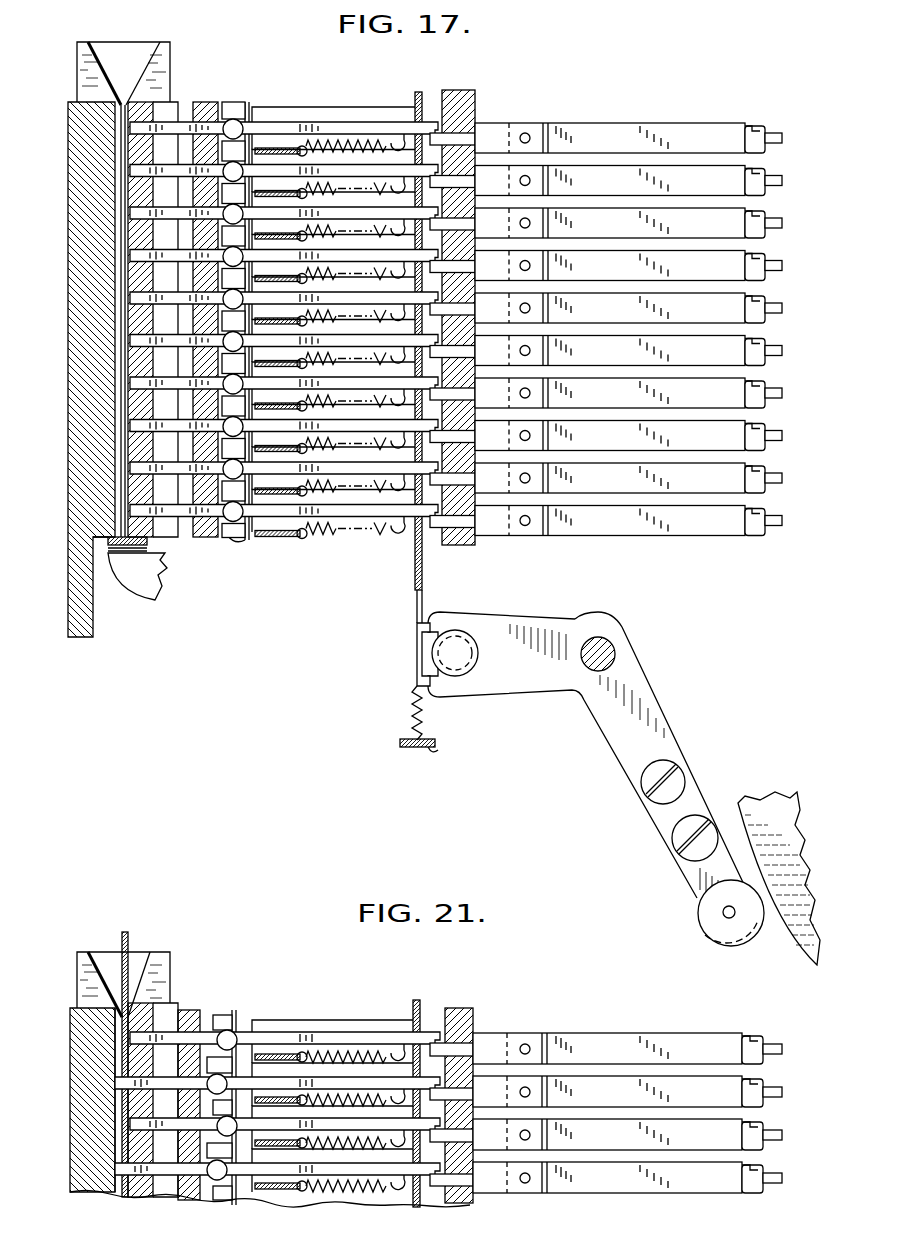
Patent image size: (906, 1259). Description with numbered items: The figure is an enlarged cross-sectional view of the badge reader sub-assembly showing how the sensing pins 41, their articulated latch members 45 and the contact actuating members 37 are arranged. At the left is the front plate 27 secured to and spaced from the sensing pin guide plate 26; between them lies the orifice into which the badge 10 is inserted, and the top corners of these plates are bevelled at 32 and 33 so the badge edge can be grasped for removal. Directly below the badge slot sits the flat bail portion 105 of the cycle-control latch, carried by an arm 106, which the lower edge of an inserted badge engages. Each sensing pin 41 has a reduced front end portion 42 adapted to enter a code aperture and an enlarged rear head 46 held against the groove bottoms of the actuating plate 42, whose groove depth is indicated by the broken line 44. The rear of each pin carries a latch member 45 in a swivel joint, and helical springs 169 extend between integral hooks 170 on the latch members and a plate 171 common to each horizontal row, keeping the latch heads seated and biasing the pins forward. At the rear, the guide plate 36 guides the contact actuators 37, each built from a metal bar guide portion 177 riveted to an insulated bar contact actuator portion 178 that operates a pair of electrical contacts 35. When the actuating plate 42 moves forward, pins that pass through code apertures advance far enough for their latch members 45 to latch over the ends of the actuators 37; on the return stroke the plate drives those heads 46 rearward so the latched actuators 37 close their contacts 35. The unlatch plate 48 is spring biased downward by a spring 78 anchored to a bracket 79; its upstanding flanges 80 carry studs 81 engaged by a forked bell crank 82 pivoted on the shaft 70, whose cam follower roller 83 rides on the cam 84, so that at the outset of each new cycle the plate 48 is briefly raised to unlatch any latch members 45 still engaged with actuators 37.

In FIG. 21, the badge 10 is at (128, 940).
In FIG. 17, the sensing pin guide plate 26 is at (140, 110).
In FIG. 21, the sensing pin guide plate 26 is at (160, 980).
In FIG. 17, the front plate 27 is at (70, 324).
In FIG. 21, the front plate 27 is at (72, 1022).
In FIG. 21, the bevel 32 is at (145, 962).
In FIG. 21, the bevel 33 is at (105, 960).
In FIG. 17, the electrical contacts 35 is at (785, 178).
In FIG. 21, the electrical contacts 35 is at (785, 1090).
In FIG. 17, the guide plate 36 is at (462, 100).
In FIG. 21, the guide plate 36 is at (460, 1010).
In FIG. 17, the contact actuators 37 is at (575, 130).
In FIG. 21, the contact actuators 37 is at (594, 1042).
In FIG. 17, the sensing pins 41 is at (176, 192).
In FIG. 21, the sensing pins 41 is at (166, 1106).
In FIG. 17, the actuating plate 42 is at (204, 112).
In FIG. 21, the actuating plate 42 is at (205, 1020).
In FIG. 17, the broken line indicating groove depth 44 is at (243, 540).
In FIG. 17, the articulated latch member 45 is at (328, 118).
In FIG. 21, the articulated latch member 45 is at (314, 1035).
In FIG. 17, the enlarged head 46 is at (233, 112).
In FIG. 17, the unlatch plate 48 is at (421, 100).
In FIG. 21, the unlatch plate 48 is at (416, 1000).
In FIG. 17, the shaft 70 is at (605, 652).
In FIG. 17, the spring 78 is at (422, 716).
In FIG. 17, the bracket 79 is at (400, 744).
In FIG. 17, the upstanding flanges 80 is at (424, 654).
In FIG. 17, the stud 81 is at (462, 638).
In FIG. 17, the forked bell crank 82 is at (688, 770).
In FIG. 17, the cam follower roller 83 is at (712, 938).
In FIG. 17, the cam 84 is at (780, 826).
In FIG. 17, the bail portion 105 is at (140, 554).
In FIG. 17, the arm 106 is at (150, 585).
In FIG. 17, the helical springs 169 is at (353, 140).
In FIG. 21, the helical springs 169 is at (342, 1200).
In FIG. 17, the hooks 170 is at (396, 135).
In FIG. 17, the plate 171 is at (270, 148).
In FIG. 17, the metal bar guide portion 177 is at (497, 130).
In FIG. 17, the insulated bar contact actuator portion 178 is at (690, 130).